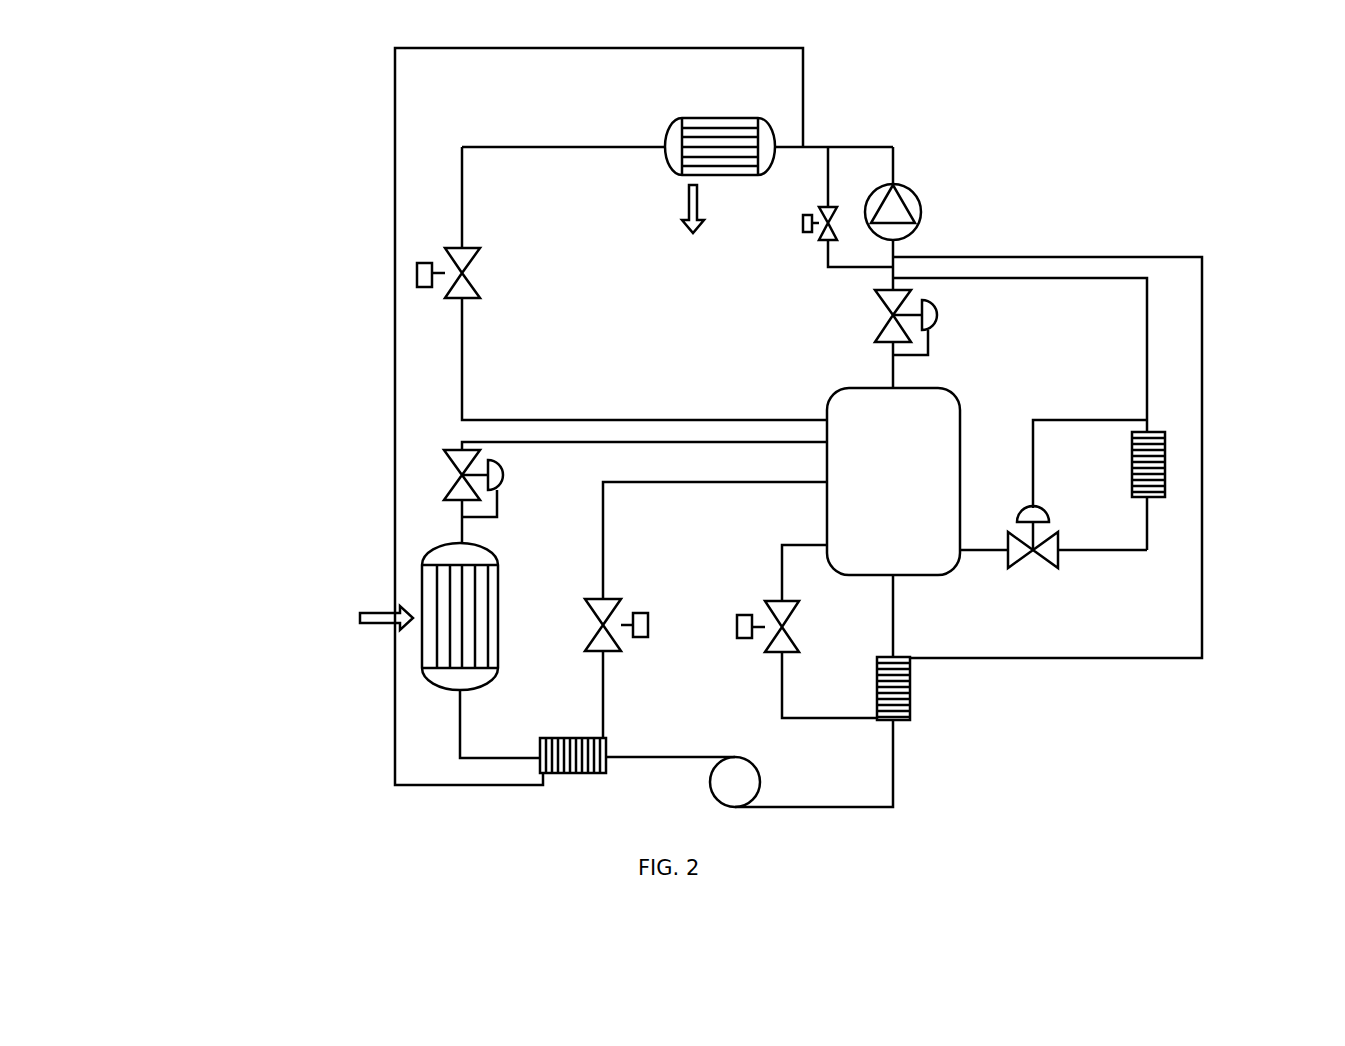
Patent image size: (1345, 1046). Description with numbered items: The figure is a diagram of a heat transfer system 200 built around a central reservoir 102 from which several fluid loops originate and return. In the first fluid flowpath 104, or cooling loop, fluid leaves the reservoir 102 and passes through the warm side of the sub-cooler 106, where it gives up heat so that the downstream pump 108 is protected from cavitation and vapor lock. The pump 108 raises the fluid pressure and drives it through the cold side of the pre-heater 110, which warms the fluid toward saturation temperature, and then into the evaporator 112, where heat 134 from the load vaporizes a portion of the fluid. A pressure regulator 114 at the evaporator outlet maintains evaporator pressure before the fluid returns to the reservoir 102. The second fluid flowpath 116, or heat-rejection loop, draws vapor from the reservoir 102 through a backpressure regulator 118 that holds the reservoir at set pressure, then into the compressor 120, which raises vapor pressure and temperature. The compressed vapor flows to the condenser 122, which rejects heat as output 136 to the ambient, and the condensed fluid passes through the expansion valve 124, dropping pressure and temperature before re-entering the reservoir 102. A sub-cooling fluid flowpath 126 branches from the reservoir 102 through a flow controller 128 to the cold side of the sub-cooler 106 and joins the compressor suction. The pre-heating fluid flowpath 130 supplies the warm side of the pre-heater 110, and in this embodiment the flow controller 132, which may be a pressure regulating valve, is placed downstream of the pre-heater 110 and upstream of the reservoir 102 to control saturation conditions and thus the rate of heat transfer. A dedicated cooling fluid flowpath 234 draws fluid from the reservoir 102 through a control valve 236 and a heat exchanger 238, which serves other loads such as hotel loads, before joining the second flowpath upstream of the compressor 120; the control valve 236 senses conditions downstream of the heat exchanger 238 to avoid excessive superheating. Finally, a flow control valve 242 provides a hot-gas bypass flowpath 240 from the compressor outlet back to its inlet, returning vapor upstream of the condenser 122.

The heat transfer system 200 is at (198, 139).
The reservoir 102 is at (952, 580).
The first fluid flowpath 104 is at (908, 760).
The sub-cooler 106 is at (922, 695).
The pump 108 is at (697, 790).
The pre-heater 110 is at (563, 783).
The evaporator 112 is at (412, 546).
The pressure regulator 114 is at (437, 472).
The second fluid flowpath 116 is at (643, 415).
The pressure regulator 118 is at (945, 323).
The compressor 120 is at (935, 212).
The condenser 122 is at (681, 117).
The expansion valve 124 is at (412, 271).
The sub-cooling fluid flowpath 126 is at (830, 723).
The flow controller 128 is at (733, 622).
The pre-heating fluid flowpath 130 is at (387, 757).
The flow controller 132 is at (625, 662).
The heat 134 is at (365, 621).
The output 136 is at (698, 228).
The cooling fluid flowpath 234 is at (1150, 365).
The control valve 236 is at (1082, 522).
The heat exchanger 238 is at (1175, 455).
The hot-gas bypass flowpath 240 is at (838, 167).
The flow control valve 242 is at (803, 252).